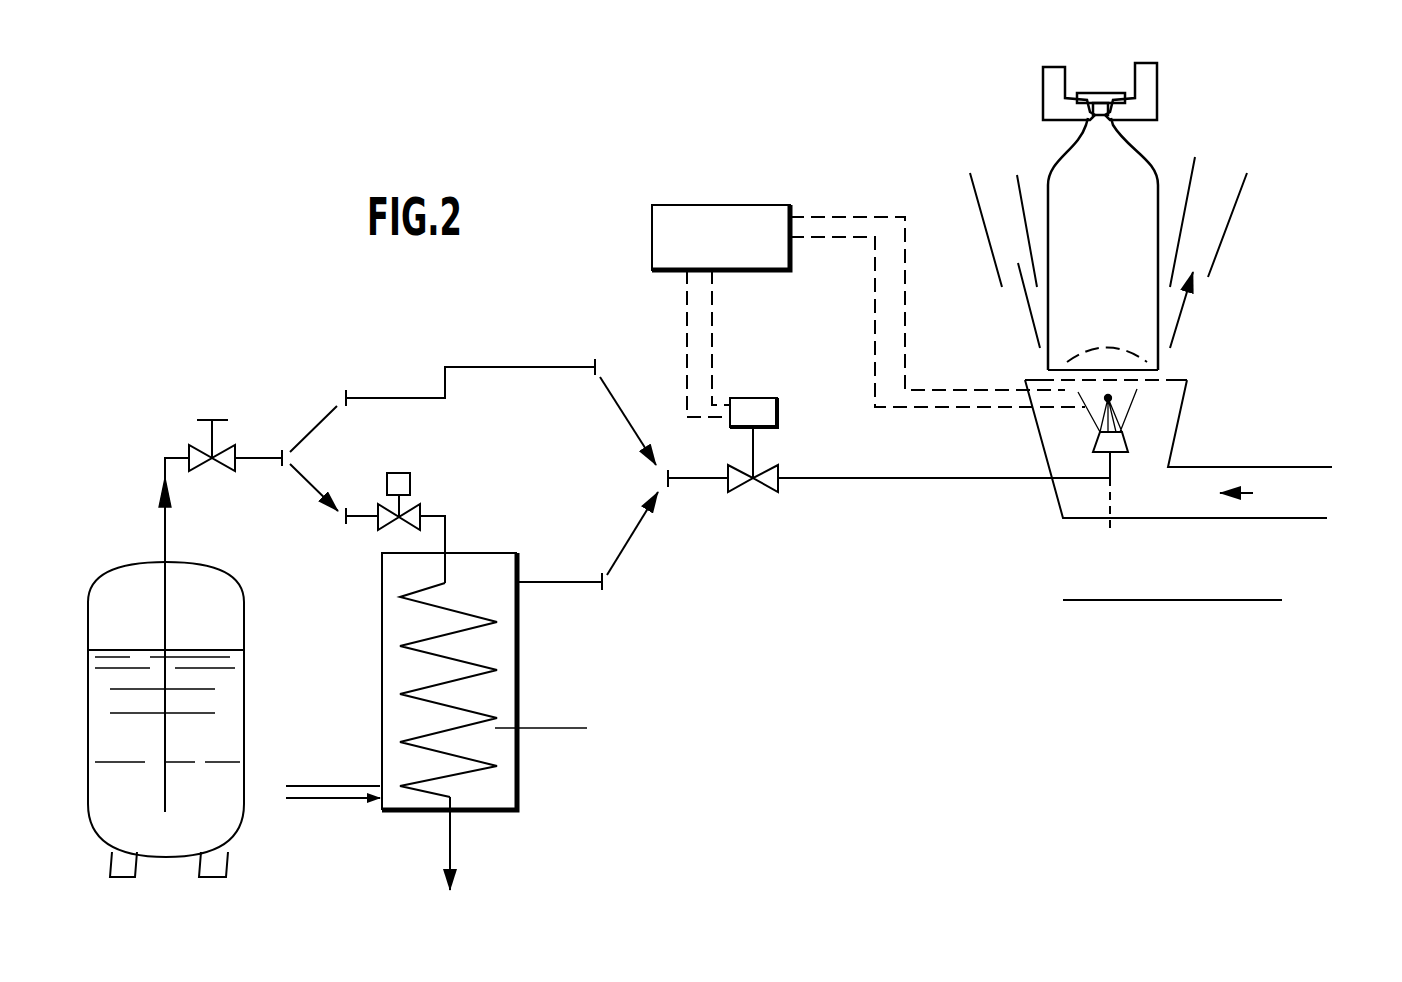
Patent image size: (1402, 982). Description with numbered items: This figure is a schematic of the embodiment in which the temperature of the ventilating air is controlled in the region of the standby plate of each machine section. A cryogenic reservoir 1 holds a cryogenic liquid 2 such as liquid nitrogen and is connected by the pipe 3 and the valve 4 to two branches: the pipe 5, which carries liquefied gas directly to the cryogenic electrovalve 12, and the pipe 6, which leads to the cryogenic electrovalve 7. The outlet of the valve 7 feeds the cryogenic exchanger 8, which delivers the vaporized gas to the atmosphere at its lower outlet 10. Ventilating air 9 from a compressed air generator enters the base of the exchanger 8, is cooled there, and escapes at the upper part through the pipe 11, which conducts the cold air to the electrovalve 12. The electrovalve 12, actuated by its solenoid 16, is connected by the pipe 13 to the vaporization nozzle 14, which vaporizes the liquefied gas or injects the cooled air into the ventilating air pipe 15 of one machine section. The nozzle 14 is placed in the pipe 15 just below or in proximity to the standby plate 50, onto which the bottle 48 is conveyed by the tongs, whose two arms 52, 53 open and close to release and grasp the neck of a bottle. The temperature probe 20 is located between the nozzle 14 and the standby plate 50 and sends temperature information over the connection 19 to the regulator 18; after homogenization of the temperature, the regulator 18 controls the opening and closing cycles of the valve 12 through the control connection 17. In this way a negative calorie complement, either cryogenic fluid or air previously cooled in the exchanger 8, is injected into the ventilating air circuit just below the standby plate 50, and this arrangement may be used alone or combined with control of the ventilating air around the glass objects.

The cryogenic reservoir 1 is at (245, 757).
The cryogenic liquid 2 is at (221, 679).
The pipe 3 is at (167, 534).
The valve 4 is at (232, 432).
The pipe 5 is at (472, 367).
The liquid nitrogen line 6 is at (358, 514).
The cryogenic electrovalve 7 is at (419, 514).
The cryogenic exchanger 8 is at (470, 553).
The ventilating air 9 is at (348, 789).
The gaseous nitrogen outlet 10 is at (455, 832).
The pipe 11 is at (597, 582).
The cryogenic electrovalve 12 is at (737, 463).
The pipe 13 is at (835, 478).
The vaporization nozzle 14 is at (1093, 446).
The pipe 15 is at (1190, 519).
The solenoid 16 is at (778, 413).
The control line 17 is at (713, 313).
The regulator 18 is at (737, 210).
The probe signal line 19 is at (907, 330).
The temperature probe 20 is at (1108, 395).
The bottle 48 is at (1073, 150).
The standby plate 50 is at (1032, 380).
The arm 52 is at (1157, 85).
The arm 53 is at (1048, 90).